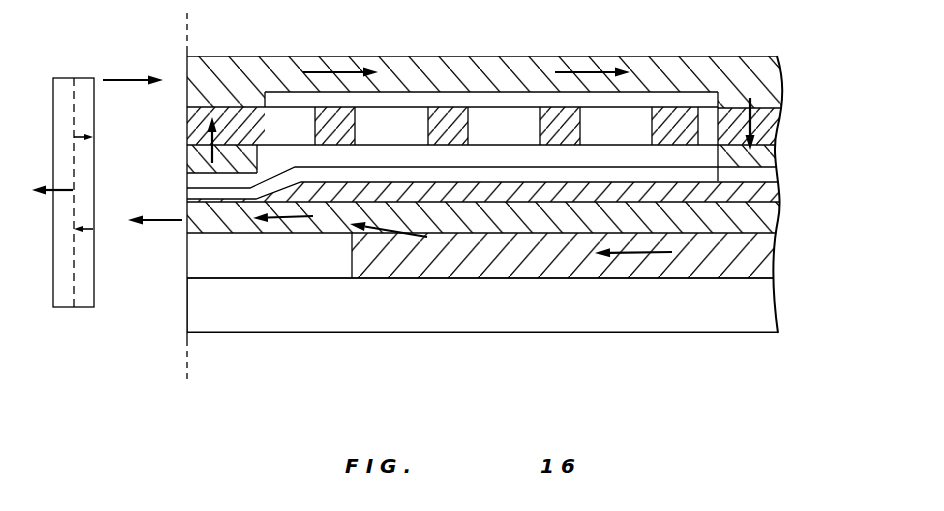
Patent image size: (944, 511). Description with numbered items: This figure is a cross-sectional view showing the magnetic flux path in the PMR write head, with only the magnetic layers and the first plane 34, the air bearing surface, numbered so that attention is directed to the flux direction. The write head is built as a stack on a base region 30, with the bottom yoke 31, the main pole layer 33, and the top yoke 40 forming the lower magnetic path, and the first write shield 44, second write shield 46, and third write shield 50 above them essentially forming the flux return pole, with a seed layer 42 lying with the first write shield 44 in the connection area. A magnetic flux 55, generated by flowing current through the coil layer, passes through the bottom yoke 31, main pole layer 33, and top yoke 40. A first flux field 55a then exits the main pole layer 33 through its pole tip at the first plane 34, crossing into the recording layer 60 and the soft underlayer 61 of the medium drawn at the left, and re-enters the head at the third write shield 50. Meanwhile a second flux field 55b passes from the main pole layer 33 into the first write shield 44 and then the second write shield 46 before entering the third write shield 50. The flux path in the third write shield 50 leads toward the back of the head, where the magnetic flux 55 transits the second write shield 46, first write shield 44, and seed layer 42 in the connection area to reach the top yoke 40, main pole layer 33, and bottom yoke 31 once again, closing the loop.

The substrate 30 is at (783, 310).
The bottom yoke 31 is at (783, 260).
The main pole layer 33 is at (783, 218).
The first plane (ABS) 34 is at (185, 33).
The top yoke 40 is at (783, 192).
The seed layer 42 is at (783, 173).
The first write shield 44 is at (787, 155).
The second write shield 46 is at (772, 128).
The third write shield 50 is at (782, 82).
The magnetic flux 55 is at (338, 76).
The first flux field 55a is at (120, 79).
The second flux field 55b is at (209, 160).
The recording layer 60 is at (87, 307).
The soft underlayer 61 is at (63, 307).